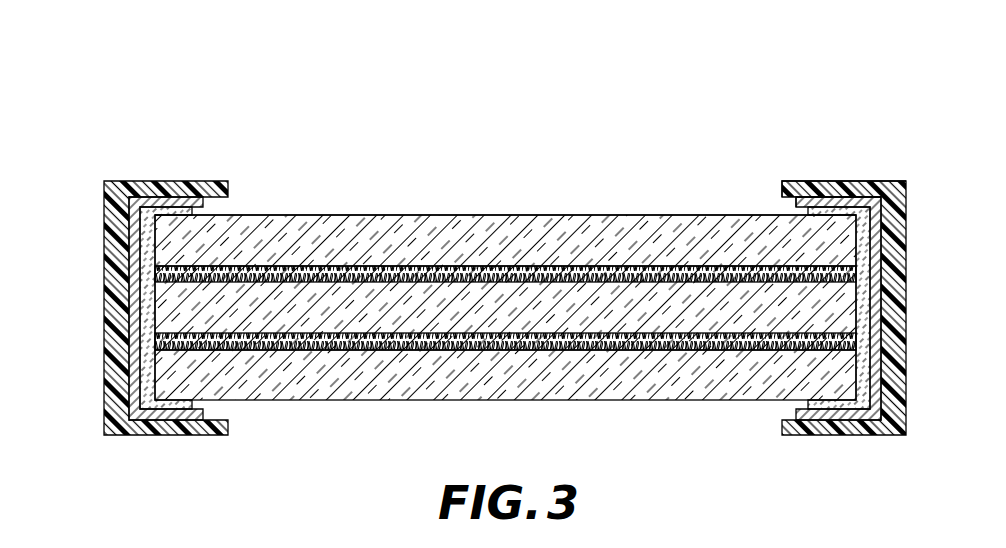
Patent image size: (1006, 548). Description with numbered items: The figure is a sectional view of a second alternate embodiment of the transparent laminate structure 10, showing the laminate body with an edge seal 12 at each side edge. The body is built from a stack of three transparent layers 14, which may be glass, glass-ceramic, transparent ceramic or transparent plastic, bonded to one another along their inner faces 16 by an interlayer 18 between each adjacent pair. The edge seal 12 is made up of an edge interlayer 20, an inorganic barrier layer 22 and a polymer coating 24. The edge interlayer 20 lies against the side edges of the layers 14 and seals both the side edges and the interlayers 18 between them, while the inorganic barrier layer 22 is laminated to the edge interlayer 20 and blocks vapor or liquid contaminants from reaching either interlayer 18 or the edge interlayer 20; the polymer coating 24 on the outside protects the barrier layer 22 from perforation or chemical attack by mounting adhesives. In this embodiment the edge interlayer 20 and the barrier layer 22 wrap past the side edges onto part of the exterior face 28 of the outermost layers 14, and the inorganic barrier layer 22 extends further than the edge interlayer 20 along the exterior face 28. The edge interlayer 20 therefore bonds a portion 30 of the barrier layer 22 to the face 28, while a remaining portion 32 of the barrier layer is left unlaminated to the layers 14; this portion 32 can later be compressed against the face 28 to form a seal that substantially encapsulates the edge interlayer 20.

The transparent laminate structure 10 is at (198, 97).
The edge seal 12 is at (135, 450).
The transparent layers 14 is at (505, 312).
The inner faces 16 is at (300, 198).
The interlayer 18 is at (398, 267).
The edge interlayer 20 is at (142, 229).
The inorganic barrier layer 22 is at (133, 289).
The polymer coating 24 is at (112, 316).
The exterior face 28 is at (815, 216).
The portion of inorganic barrier layer 30 is at (853, 196).
The remaining portion of inorganic barrier layer 32 is at (800, 197).